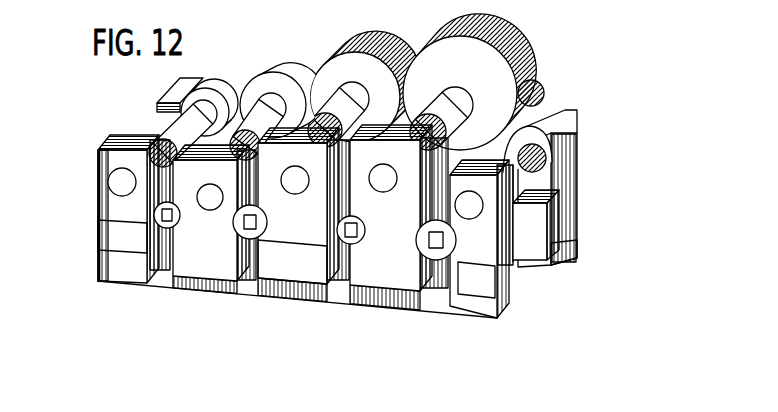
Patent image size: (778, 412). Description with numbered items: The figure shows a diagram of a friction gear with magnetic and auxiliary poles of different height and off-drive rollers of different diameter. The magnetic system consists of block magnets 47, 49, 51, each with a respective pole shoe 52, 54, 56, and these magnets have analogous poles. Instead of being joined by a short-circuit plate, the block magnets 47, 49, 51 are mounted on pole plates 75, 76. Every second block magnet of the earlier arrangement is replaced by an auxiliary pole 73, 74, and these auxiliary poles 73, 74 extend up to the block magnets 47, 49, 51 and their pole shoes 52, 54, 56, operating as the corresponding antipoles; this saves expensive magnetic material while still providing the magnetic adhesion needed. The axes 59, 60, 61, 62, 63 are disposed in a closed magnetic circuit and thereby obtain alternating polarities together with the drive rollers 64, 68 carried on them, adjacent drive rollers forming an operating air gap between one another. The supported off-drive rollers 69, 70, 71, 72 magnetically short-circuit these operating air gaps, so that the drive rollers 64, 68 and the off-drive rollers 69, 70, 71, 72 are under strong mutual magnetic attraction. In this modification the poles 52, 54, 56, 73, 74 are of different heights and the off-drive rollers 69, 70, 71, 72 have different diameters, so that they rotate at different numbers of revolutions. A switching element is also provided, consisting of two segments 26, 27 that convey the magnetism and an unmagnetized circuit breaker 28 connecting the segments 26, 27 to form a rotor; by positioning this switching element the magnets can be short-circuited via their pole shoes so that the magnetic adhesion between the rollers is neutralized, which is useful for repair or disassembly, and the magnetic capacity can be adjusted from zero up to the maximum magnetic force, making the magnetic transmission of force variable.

The segment 26 is at (100, 203).
The segment 27 is at (160, 252).
The circuit breaker 28 is at (150, 223).
The block magnet 47 is at (100, 247).
The block magnet 49 is at (272, 266).
The block magnet 51 is at (478, 216).
The pole shoe 52 is at (150, 143).
The pole shoe 54 is at (248, 262).
The pole shoe 56 is at (498, 292).
The axis 59 is at (112, 176).
The axis 60 is at (212, 209).
The axis 61 is at (300, 193).
The axis 62 is at (390, 193).
The axis 63 is at (513, 220).
The drive roller 64 is at (160, 128).
The drive roller 68 is at (542, 157).
The off-drive roller 69 is at (238, 72).
The off-drive roller 70 is at (292, 84).
The off-drive roller 71 is at (366, 55).
The off-drive roller 72 is at (524, 63).
The auxiliary pole 73 is at (195, 252).
The auxiliary pole 74 is at (372, 263).
The pole plate 75 is at (308, 290).
The pole plate 76 is at (568, 242).